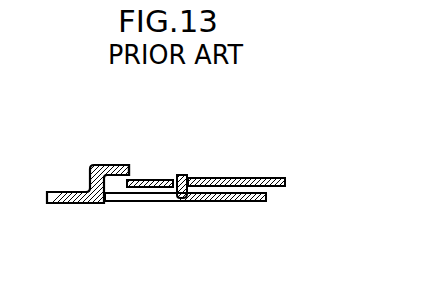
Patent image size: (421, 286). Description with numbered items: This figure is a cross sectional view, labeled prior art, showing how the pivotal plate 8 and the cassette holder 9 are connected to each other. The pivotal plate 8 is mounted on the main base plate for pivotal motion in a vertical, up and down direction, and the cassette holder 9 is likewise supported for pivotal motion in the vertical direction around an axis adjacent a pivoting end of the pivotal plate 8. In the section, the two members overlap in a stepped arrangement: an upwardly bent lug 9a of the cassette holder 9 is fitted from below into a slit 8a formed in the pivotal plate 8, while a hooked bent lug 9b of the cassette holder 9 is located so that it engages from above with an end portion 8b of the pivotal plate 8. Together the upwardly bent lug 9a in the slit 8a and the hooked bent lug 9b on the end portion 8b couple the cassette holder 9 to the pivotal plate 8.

The cassette holder 9 is at (58, 190).
The upwardly bent lug 9a is at (178, 175).
The hooked bent lug 9b is at (117, 165).
The pivotal plate 8 is at (238, 178).
The slit 8a is at (188, 178).
The end portion 8b is at (117, 193).